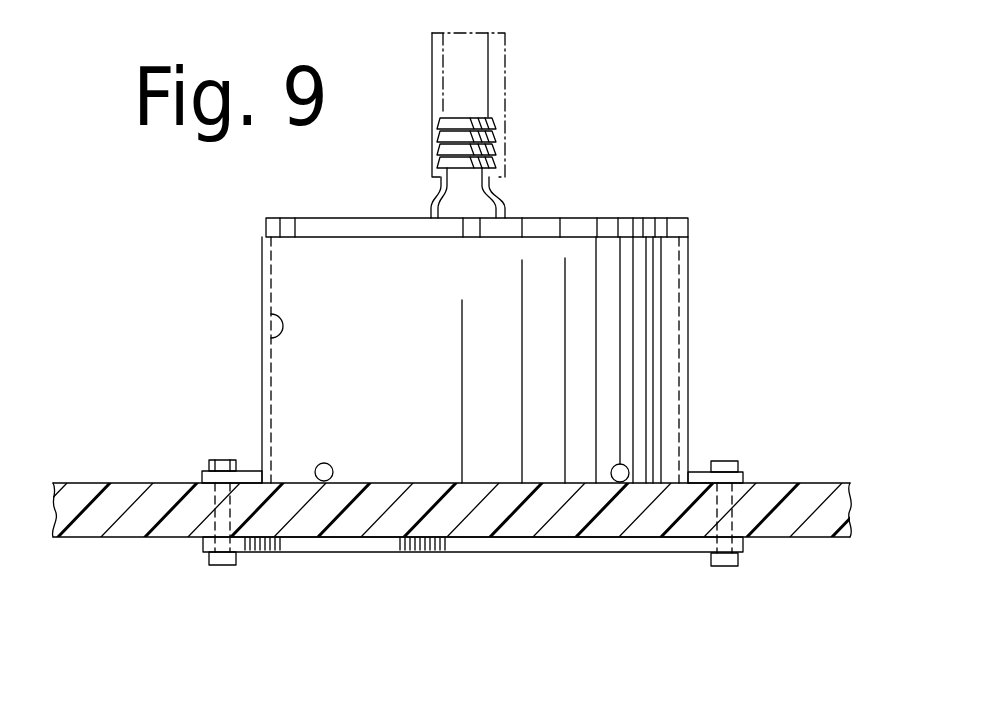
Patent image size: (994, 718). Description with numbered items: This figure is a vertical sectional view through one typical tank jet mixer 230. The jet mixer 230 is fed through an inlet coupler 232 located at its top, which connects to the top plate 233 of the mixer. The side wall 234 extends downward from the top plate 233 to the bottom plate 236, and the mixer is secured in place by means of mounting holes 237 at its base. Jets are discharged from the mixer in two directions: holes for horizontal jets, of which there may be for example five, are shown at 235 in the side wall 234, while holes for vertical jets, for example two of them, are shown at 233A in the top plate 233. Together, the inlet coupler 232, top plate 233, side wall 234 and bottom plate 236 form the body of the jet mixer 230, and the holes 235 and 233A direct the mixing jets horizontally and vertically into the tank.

The jet mixer 230 is at (688, 219).
The inlet coupler 232 is at (497, 182).
The top plate 233 is at (552, 238).
The holes for vertical jets 233A is at (473, 238).
The side wall 234 is at (263, 338).
The holes for horizontal jets 235 is at (318, 465).
The bottom plate 236 is at (540, 552).
The mounting holes 237 is at (215, 460).